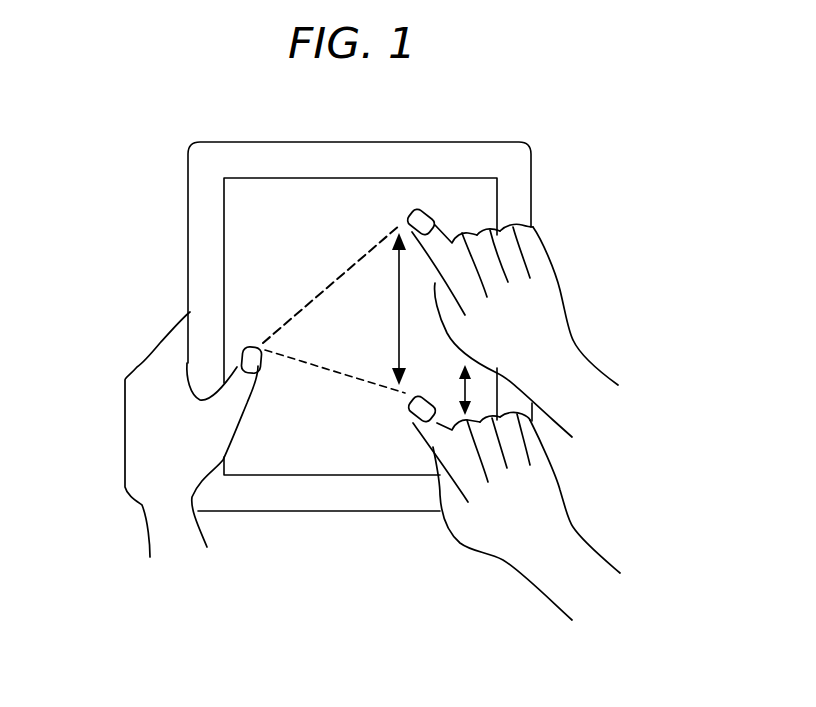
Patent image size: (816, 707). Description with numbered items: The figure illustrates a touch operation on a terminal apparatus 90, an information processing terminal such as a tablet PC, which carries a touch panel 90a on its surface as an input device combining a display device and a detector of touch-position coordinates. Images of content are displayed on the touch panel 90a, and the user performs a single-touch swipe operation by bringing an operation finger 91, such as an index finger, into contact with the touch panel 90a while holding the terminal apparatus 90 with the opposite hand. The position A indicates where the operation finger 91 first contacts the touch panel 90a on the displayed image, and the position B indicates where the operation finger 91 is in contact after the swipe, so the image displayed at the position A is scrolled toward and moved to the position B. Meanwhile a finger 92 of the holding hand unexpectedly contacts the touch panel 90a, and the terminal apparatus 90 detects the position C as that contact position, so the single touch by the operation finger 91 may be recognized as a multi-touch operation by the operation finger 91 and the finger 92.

The terminal apparatus 90 is at (562, 148).
The touch panel 90a is at (253, 232).
The operation finger 91 is at (437, 233).
The finger 92 is at (252, 383).
The position A is at (400, 220).
The position B is at (408, 405).
The position C is at (255, 341).